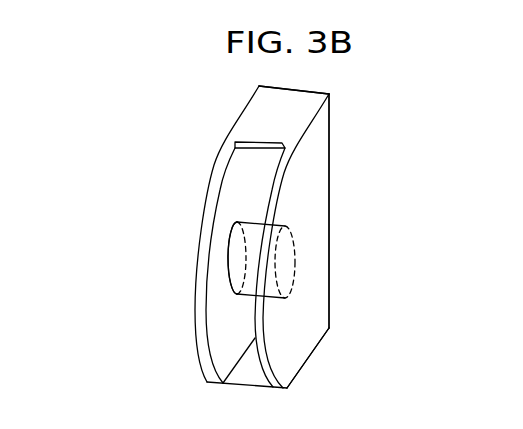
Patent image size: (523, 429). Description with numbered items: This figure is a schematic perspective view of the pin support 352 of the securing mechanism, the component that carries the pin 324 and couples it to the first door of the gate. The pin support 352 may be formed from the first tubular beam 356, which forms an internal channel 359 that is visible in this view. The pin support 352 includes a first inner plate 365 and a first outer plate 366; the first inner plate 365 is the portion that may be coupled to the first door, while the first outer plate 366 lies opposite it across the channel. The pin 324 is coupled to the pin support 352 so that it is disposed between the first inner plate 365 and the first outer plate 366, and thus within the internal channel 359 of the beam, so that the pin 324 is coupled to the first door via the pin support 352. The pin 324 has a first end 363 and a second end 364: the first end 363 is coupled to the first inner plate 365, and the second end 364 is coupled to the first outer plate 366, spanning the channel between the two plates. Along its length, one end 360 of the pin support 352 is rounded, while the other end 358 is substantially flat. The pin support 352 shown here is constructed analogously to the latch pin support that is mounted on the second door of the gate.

The pin support 352 is at (102, 317).
The first tubular beam 356 is at (322, 160).
The other end 358 is at (329, 185).
The internal channel 359 is at (245, 163).
The one end 360 is at (200, 318).
The first end 363 is at (295, 250).
The second end 364 is at (228, 270).
The first inner plate 365 is at (307, 345).
The first outer plate 366 is at (205, 198).
The pin 324 is at (245, 247).